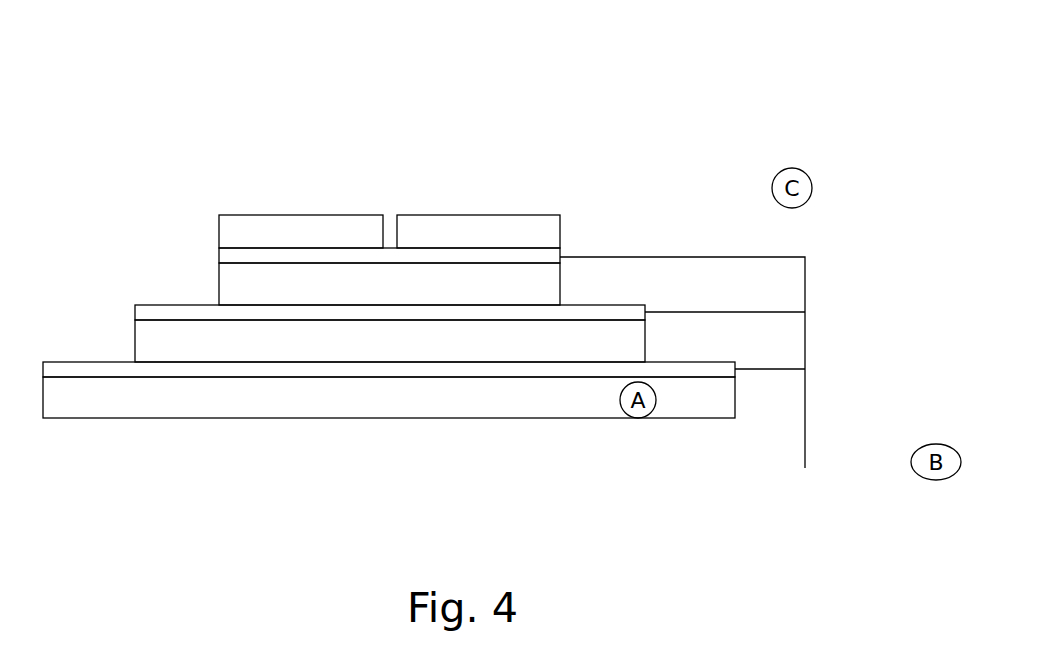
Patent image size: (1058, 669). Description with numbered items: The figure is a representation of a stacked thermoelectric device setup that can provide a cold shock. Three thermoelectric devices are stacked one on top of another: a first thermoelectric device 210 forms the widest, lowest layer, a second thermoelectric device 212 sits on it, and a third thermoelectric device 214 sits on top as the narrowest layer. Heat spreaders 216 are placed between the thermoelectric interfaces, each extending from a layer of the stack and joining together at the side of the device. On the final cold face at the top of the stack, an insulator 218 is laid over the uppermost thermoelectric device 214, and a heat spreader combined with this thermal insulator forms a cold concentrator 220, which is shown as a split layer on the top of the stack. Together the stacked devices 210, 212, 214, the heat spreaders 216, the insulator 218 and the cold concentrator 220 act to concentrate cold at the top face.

The thermoelectric device 210 is at (389, 390).
The second thermoelectric generator (TEG 2) 212 is at (390, 333).
The third thermoelectric generator (TEG 3) 214 is at (389, 284).
The heat spreaders 216 is at (729, 400).
The insulator 218 is at (570, 223).
The cold concentrator 220 is at (395, 210).